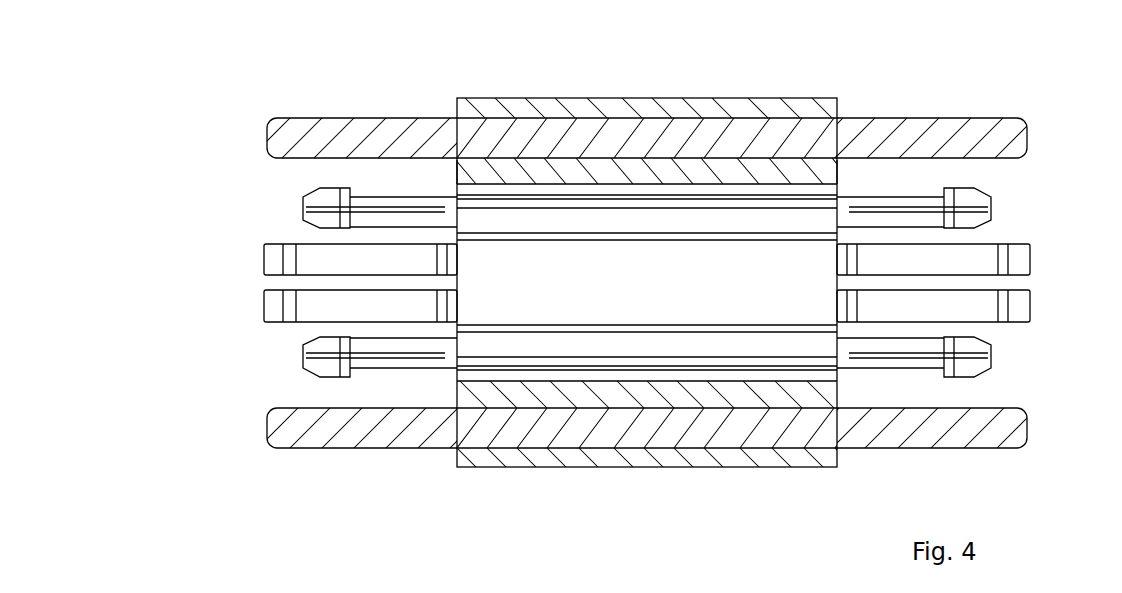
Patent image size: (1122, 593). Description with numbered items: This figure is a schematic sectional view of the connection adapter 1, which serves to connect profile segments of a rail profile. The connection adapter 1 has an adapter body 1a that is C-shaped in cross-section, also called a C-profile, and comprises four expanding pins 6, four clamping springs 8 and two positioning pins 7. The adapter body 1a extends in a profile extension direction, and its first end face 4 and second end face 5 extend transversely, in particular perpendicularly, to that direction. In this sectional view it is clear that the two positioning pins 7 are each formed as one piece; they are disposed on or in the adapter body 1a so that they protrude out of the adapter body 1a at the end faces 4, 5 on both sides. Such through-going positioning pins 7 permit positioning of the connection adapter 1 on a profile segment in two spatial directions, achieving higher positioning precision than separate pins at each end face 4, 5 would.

The connection adapter 1 is at (195, 76).
The adapter body 1a is at (770, 98).
The first end face 4 is at (455, 170).
The second end face 5 is at (837, 167).
The expanding pins 6 is at (322, 220).
The positioning pins 7 is at (990, 143).
The clamping springs 8 is at (272, 312).